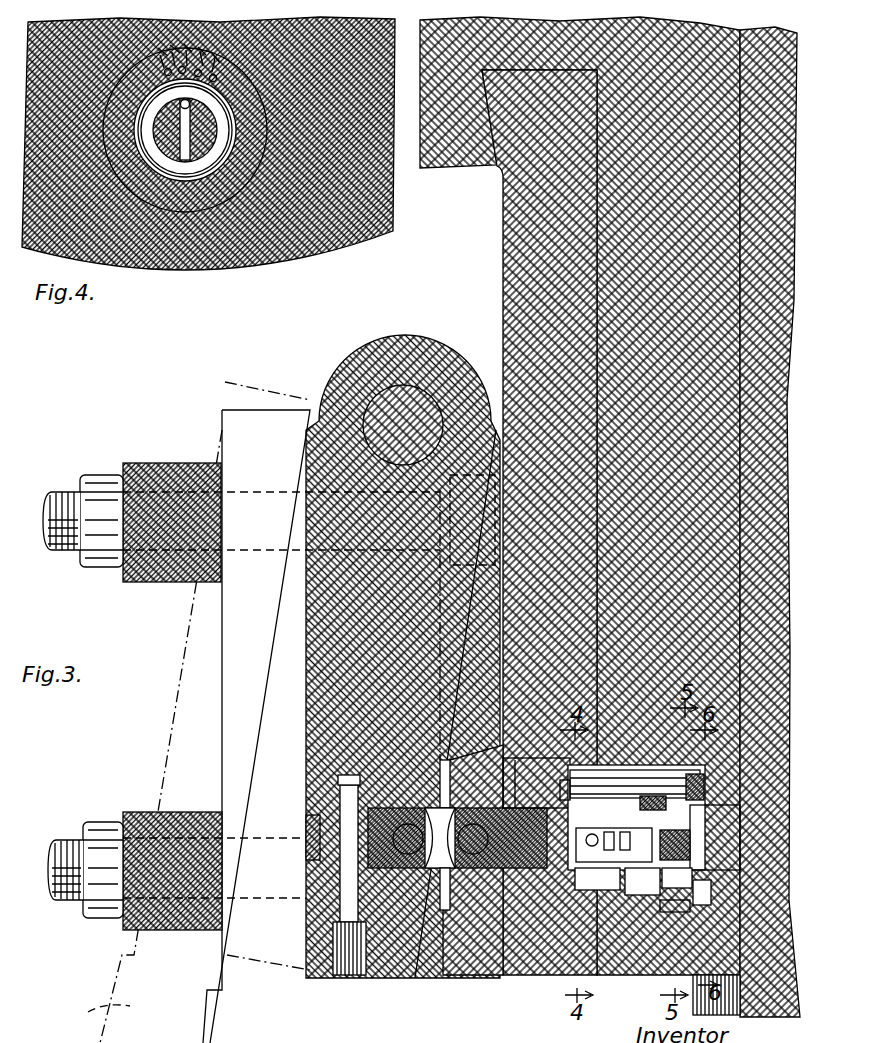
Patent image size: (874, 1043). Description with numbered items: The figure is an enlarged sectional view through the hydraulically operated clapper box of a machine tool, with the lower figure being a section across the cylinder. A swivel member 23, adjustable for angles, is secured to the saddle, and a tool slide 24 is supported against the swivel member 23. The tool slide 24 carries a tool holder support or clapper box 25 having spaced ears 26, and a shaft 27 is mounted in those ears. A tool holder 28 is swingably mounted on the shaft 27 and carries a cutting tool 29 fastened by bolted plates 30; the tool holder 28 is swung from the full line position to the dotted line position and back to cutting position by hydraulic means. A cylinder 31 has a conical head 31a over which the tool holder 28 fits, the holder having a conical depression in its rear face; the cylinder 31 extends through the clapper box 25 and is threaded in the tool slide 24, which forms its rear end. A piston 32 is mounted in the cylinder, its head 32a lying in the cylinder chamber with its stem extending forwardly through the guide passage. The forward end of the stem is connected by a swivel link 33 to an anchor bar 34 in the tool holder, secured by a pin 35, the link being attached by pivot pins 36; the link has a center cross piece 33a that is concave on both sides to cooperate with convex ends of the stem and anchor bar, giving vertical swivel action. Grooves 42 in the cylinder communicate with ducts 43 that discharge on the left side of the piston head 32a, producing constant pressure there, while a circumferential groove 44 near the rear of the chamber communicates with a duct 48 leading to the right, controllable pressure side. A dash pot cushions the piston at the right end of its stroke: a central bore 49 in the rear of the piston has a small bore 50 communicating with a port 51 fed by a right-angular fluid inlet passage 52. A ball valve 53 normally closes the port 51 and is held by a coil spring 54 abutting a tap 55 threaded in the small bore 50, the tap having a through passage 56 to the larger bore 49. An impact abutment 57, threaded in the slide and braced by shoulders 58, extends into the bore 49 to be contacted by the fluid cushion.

In FIG. 3, the swivel member 23 is at (771, 42).
In FIG. 4, the tool slide 24 is at (240, 258).
In FIG. 3, the tool slide 24 is at (662, 42).
In FIG. 3, the clapper box 25 is at (503, 272).
In FIG. 3, the ears 26 is at (392, 982).
In FIG. 3, the shaft 27 is at (400, 388).
In FIG. 3, the tool holder 28 is at (306, 636).
In FIG. 3, the cutting tool 29 is at (95, 1021).
In FIG. 3, the bolted plates 30 is at (190, 463).
In FIG. 4, the cylinder 31 is at (150, 188).
In FIG. 3, the cylinder 31 is at (470, 915).
In FIG. 3, the conical head 31a is at (440, 780).
In FIG. 4, the piston 32 is at (160, 140).
In FIG. 3, the piston 32 is at (515, 800).
In FIG. 4, the piston head 32a is at (165, 162).
In FIG. 3, the piston head 32a is at (650, 930).
In FIG. 3, the swivel link 33 is at (480, 800).
In FIG. 3, the center cross piece 33a is at (462, 870).
In FIG. 3, the anchor bar 34 is at (380, 880).
In FIG. 3, the pin 35 is at (340, 895).
In FIG. 3, the pivot pins 36 is at (395, 812).
In FIG. 4, the groove 42 is at (160, 68).
In FIG. 3, the groove 42 is at (565, 785).
In FIG. 4, the ducts 43 is at (180, 72).
In FIG. 3, the ducts 43 is at (570, 788).
In FIG. 3, the circumferential groove 44 is at (700, 760).
In FIG. 3, the duct 48 is at (712, 895).
In FIG. 3, the central bore 49 is at (702, 800).
In FIG. 3, the small bore 50 is at (604, 880).
In FIG. 4, the port 51 is at (167, 128).
In FIG. 3, the port 51 is at (586, 840).
In FIG. 4, the fluid inlet passage 52 is at (180, 106).
In FIG. 3, the fluid inlet passage 52 is at (600, 828).
In FIG. 3, the ball valve 53 is at (585, 868).
In FIG. 3, the coil spring 54 is at (645, 878).
In FIG. 3, the tap 55 is at (640, 800).
In FIG. 3, the through passage 56 is at (612, 800).
In FIG. 3, the impact abutment 57 is at (702, 835).
In FIG. 3, the shoulders 58 is at (700, 860).